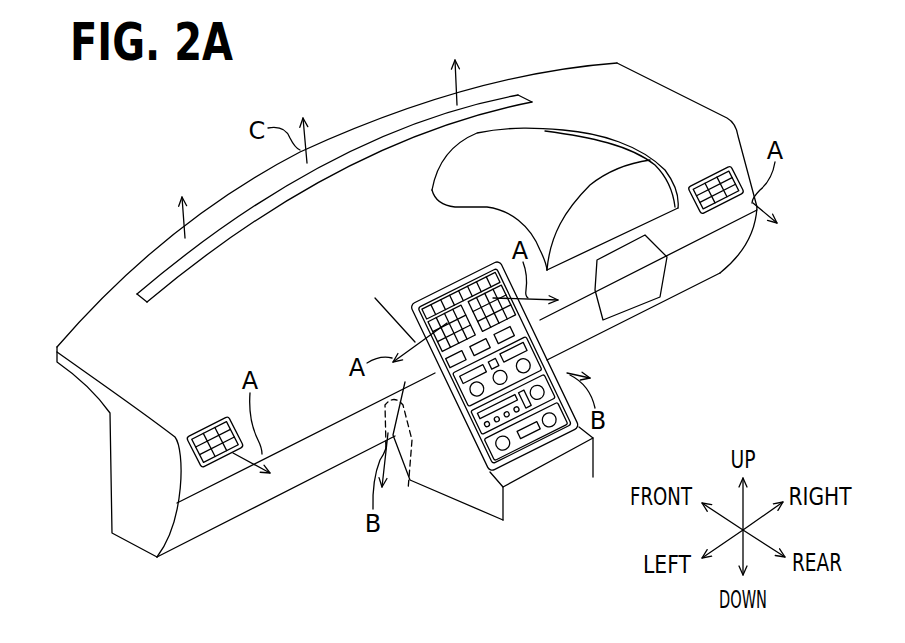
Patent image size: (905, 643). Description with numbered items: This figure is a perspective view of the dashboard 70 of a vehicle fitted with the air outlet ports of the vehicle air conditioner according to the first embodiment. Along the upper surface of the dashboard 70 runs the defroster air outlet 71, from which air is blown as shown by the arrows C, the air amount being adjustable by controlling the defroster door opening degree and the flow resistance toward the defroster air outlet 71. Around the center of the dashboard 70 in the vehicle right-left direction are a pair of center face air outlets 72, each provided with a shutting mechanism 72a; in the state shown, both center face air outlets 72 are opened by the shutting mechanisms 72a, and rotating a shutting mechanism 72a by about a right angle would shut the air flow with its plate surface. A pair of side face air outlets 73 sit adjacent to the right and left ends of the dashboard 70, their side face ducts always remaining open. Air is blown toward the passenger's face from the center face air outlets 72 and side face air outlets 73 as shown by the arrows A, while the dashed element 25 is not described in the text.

The dashboard 70 is at (284, 452).
The defroster air outlet 71 is at (352, 150).
The center face air outlet 72 is at (418, 348).
The shutting mechanism 72a is at (443, 318).
The side face air outlet 73 is at (208, 470).
The air conditioning unit (hidden) 25 is at (408, 490).